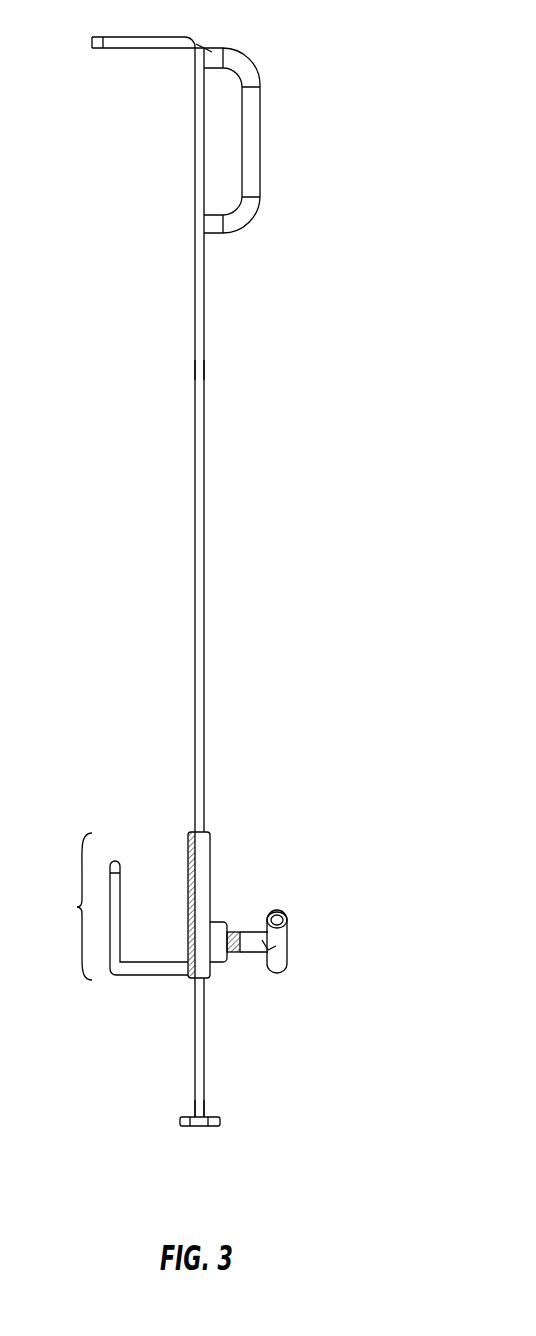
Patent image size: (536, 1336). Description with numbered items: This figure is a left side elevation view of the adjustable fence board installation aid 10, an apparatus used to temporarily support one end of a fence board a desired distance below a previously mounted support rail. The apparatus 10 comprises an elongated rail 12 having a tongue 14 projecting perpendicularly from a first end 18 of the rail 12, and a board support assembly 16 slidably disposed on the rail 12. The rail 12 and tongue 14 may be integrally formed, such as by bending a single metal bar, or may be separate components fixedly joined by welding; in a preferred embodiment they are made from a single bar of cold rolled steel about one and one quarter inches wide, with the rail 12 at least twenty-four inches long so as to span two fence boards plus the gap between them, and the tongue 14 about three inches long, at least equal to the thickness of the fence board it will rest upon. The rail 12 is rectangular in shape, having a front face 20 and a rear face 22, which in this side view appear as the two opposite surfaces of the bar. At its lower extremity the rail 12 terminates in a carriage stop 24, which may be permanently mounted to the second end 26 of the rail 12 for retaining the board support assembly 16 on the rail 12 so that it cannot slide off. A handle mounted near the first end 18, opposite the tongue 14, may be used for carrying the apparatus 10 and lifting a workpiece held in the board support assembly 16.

The adjustable fence board installation aid 10 is at (316, 250).
The rail 12 is at (204, 547).
The tongue 14 is at (133, 49).
The board support assembly 16 is at (160, 906).
The first end 18 is at (203, 48).
The front face 20 is at (204, 370).
The rear face 22 is at (195, 370).
The carriage stop 24 is at (220, 1122).
The second end 26 is at (206, 1112).